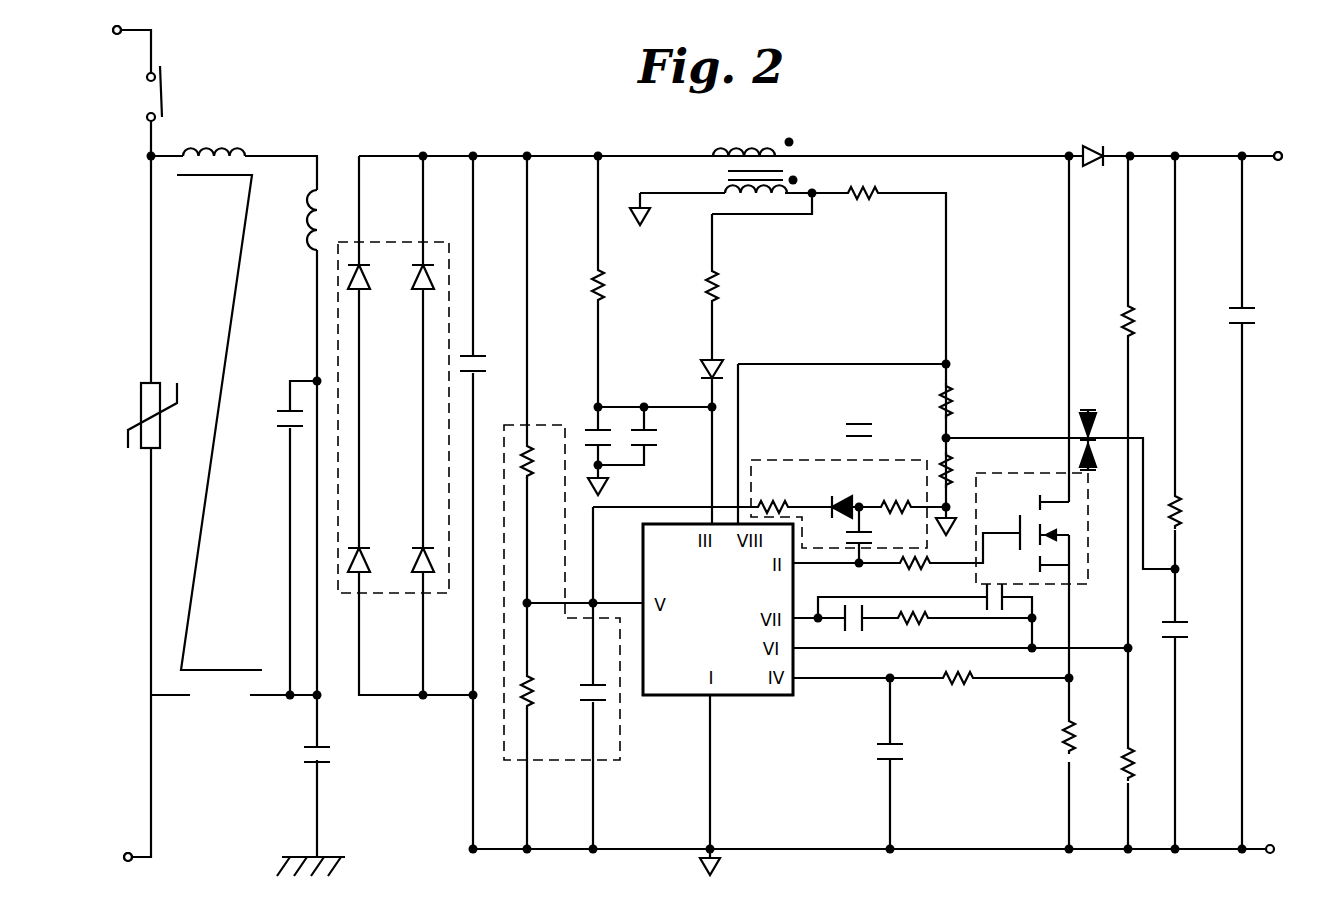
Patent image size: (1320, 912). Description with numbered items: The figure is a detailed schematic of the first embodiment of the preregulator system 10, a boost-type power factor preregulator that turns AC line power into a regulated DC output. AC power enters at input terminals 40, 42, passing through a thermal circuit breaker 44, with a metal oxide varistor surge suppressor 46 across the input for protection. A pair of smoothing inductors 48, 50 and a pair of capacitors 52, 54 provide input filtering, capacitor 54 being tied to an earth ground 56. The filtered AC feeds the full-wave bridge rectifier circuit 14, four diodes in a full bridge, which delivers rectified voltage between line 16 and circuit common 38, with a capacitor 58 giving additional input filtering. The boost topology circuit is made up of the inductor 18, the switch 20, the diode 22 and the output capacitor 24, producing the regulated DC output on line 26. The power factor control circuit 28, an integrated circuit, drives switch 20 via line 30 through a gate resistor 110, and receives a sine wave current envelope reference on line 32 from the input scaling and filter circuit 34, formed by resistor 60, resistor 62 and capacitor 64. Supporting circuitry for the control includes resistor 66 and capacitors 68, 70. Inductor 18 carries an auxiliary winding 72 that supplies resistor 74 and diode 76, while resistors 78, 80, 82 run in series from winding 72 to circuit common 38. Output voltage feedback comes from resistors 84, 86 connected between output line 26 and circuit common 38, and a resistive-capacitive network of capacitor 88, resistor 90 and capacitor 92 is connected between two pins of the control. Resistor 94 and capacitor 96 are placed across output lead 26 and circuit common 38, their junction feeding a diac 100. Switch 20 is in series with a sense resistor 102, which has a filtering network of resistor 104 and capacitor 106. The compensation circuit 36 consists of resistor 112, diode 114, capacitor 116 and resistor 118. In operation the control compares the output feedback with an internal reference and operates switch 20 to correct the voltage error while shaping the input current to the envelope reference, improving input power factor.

The preregulator system 10 is at (922, 133).
The full-wave bridge rectifier circuit 14 is at (440, 242).
The line 16 is at (567, 156).
The inductor 18 is at (723, 130).
The switch 20 is at (1088, 577).
The diode 22 is at (1093, 150).
The capacitor 24 is at (1256, 315).
The line 26 is at (1262, 152).
The power factor control circuit 28 is at (740, 706).
The line 30 is at (838, 566).
The line 32 is at (618, 603).
The input scaling and filter circuit 34 is at (620, 752).
The compensation circuit 36 is at (786, 460).
The circuit common 38 is at (955, 525).
The input terminal 40 is at (117, 34).
The input terminal 42 is at (131, 852).
The thermal circuit breaker 44 is at (180, 98).
The metal oxide varistor surge suppressor 46 is at (158, 383).
The smoothing inductor 48 is at (245, 143).
The smoothing inductor 50 is at (321, 190).
The capacitor 52 is at (277, 430).
The capacitor 54 is at (330, 746).
The earth ground 56 is at (331, 857).
The capacitor 58 is at (478, 357).
The resistor 60 is at (531, 460).
The resistor 62 is at (532, 680).
The capacitor 64 is at (586, 698).
The resistor 66 is at (601, 282).
The capacitor 68 is at (592, 430).
The capacitor 70 is at (658, 442).
The auxiliary winding 72 is at (726, 190).
The resistor 74 is at (715, 278).
The diode 76 is at (716, 364).
The resistor 78 is at (870, 196).
The resistor 80 is at (950, 398).
The resistor 82 is at (950, 468).
The resistor 84 is at (1120, 322).
The resistor 86 is at (1122, 765).
The capacitor 88 is at (856, 630).
The resistor 90 is at (925, 622).
The capacitor 92 is at (985, 591).
The resistor 94 is at (1180, 512).
The capacitor 96 is at (1178, 622).
The diac 100 is at (1082, 418).
The resistor 102 is at (1060, 750).
The resistor 104 is at (965, 680).
The capacitor 106 is at (905, 745).
The resistor 110 is at (900, 566).
The resistor 112 is at (882, 500).
The diode 114 is at (846, 500).
The capacitor 116 is at (875, 537).
The resistor 118 is at (765, 505).